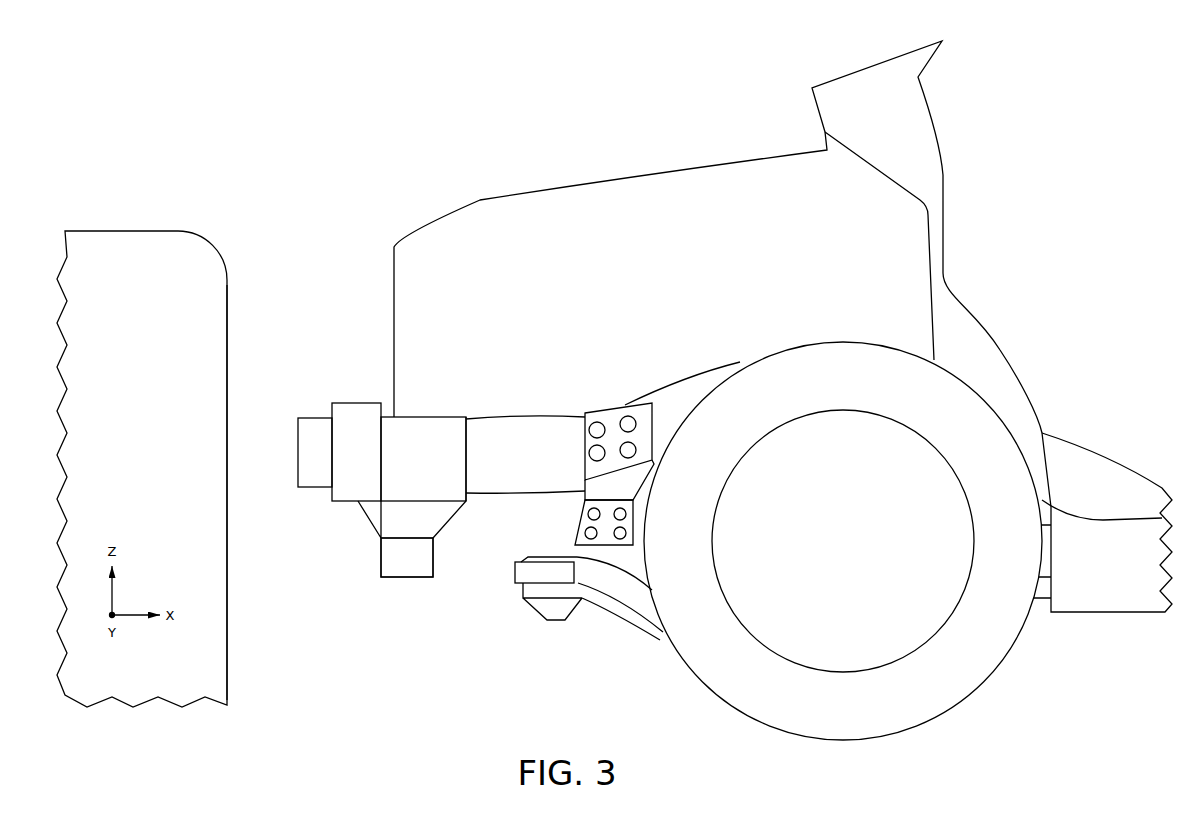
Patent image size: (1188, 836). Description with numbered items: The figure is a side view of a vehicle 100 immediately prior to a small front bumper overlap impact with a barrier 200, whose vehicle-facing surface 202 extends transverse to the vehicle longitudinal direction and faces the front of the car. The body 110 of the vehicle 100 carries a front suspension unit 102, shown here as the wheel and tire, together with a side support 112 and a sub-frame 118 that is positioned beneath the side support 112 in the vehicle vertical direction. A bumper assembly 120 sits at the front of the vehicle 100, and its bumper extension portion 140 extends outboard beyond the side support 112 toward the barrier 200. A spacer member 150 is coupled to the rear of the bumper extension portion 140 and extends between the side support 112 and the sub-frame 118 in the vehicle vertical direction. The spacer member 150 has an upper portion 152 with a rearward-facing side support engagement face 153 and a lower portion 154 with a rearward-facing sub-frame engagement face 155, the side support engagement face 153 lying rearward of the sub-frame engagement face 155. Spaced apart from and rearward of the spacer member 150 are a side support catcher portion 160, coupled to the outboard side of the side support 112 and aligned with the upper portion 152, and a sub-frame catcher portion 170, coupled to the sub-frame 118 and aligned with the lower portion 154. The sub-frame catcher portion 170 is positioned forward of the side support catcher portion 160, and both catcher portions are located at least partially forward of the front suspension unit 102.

The vehicle 100 is at (783, 386).
The front suspension unit 102 is at (857, 551).
The body 110 is at (783, 312).
The side support 112 is at (525, 410).
The sub-frame 118 is at (620, 635).
The bumper assembly 120 is at (394, 480).
The bumper extension portion 140 is at (337, 503).
The spacer member 150 is at (424, 605).
The upper portion 152 is at (424, 412).
The side support engagement face 153 is at (467, 450).
The lower portion 154 is at (387, 605).
The sub-frame engagement face 155 is at (434, 560).
The side support catcher portion 160 is at (614, 429).
The sub-frame catcher portion 170 is at (537, 635).
The barrier 200 is at (142, 412).
The vehicle-facing surface 202 is at (227, 395).